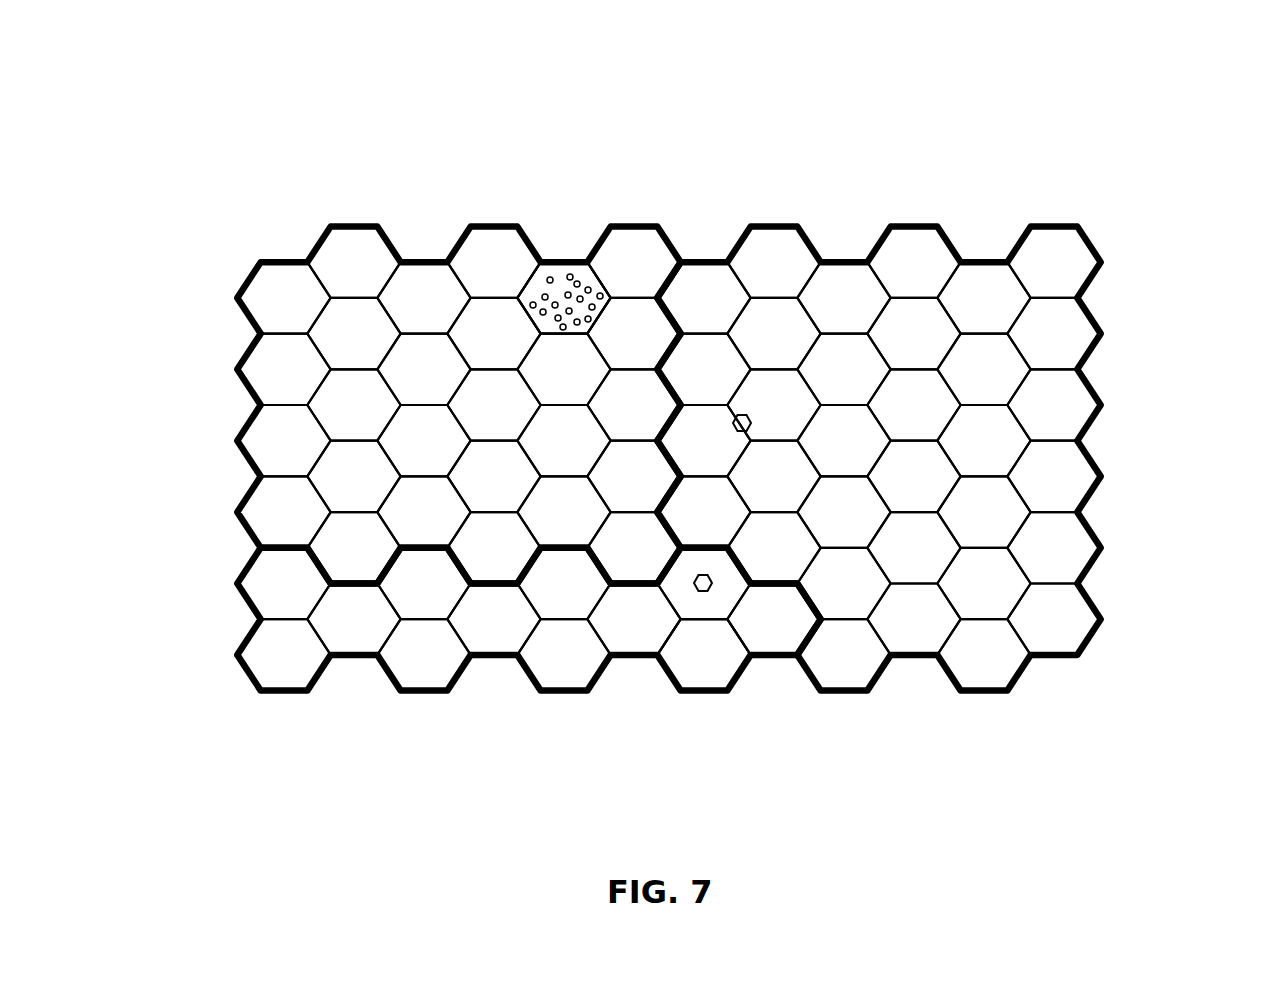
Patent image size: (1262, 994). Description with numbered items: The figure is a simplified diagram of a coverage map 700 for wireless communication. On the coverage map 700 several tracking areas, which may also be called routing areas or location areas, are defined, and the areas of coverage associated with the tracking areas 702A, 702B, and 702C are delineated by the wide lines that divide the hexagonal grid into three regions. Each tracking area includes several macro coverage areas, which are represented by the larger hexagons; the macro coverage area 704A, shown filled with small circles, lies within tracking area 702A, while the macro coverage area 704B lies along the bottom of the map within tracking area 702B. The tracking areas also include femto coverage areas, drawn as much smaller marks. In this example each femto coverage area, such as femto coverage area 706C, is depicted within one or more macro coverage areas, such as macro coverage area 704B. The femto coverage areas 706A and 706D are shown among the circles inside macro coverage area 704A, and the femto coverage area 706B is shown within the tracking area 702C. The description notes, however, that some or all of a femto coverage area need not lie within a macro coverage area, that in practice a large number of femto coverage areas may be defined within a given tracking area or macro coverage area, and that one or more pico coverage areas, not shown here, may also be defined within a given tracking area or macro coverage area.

The coverage map 700 is at (668, 56).
The tracking area 702A is at (237, 298).
The tracking area 702B is at (312, 693).
The tracking area 702C is at (1101, 477).
The macro coverage area 704A is at (525, 287).
The macro coverage area 704B is at (705, 621).
The femto coverage area 706A is at (551, 277).
The femto coverage area 706B is at (746, 414).
The femto coverage area 706C is at (704, 592).
The femto coverage area 706D is at (571, 274).